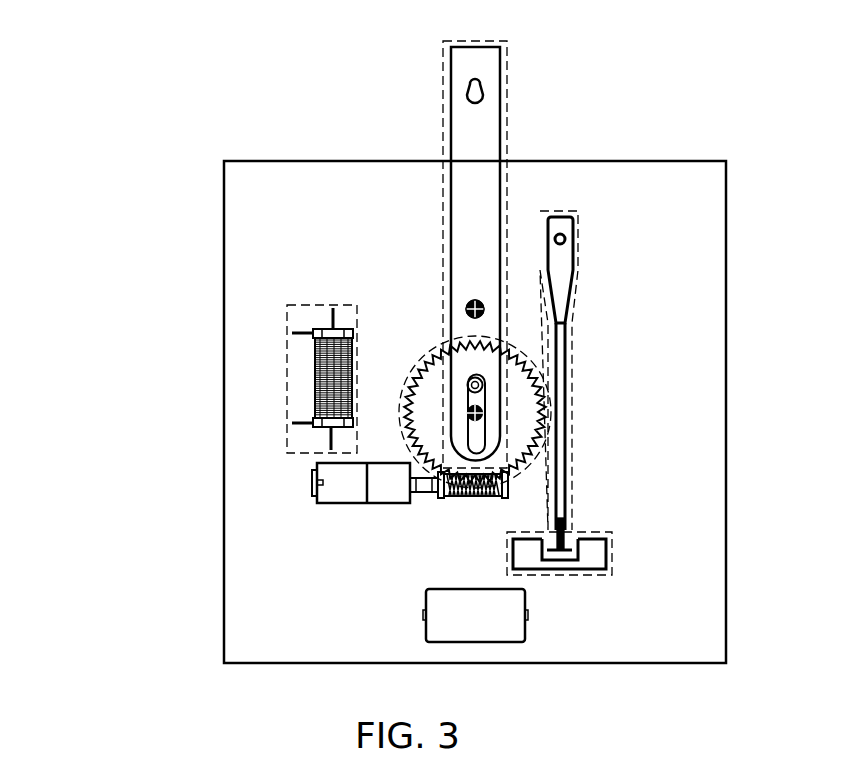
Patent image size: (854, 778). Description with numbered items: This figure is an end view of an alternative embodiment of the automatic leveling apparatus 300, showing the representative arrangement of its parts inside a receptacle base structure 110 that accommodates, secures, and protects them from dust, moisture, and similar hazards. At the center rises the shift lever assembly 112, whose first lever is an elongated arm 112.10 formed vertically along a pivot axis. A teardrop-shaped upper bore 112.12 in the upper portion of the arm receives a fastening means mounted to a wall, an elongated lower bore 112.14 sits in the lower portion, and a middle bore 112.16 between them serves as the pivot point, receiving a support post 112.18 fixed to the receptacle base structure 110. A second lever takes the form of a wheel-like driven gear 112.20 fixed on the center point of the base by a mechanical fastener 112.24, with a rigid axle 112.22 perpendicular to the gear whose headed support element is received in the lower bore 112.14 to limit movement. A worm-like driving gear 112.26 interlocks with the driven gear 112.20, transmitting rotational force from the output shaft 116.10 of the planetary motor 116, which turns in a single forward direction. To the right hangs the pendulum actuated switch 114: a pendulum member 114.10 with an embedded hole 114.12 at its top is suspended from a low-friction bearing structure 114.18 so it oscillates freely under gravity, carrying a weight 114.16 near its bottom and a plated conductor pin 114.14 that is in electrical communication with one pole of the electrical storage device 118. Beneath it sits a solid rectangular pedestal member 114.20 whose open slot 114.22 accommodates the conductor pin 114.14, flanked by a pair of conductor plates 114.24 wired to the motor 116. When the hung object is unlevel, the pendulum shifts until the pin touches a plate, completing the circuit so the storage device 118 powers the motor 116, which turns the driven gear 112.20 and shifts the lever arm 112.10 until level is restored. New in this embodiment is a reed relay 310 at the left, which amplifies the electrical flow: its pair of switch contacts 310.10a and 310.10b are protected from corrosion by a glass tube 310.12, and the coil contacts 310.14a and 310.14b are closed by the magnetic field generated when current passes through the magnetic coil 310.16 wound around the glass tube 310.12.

The automatic leveling apparatus 300 is at (182, 130).
The receptacle base structure 110 is at (224, 206).
The shift lever assembly 112 is at (507, 41).
The elongated arm 112.10 is at (451, 78).
The upper bore 112.12 is at (485, 97).
The lower bore 112.14 is at (485, 454).
The middle bore 112.16 is at (468, 303).
The support post 112.18 is at (470, 303).
The wheel-like driven gear 112.20 is at (420, 380).
The rigid axle 112.22 is at (483, 384).
The mechanical fastener 112.24 is at (483, 411).
The worm-like driving gear 112.26 is at (510, 480).
The pendulum actuated switch 114 is at (578, 224).
The pendulum member 114.10 is at (565, 338).
The embedded hole 114.12 is at (573, 243).
The conductor pin 114.14 is at (563, 552).
The weight 114.16 is at (505, 497).
The bearing structure 114.18 is at (562, 234).
The pedestal member 114.20 is at (606, 562).
The open slot 114.22 is at (570, 546).
The conductor plates 114.24 is at (578, 546).
The planetary motor 116 is at (330, 504).
The output shaft 116.10 is at (418, 492).
The electrical storage device 118 is at (426, 624).
The reed relay 310 is at (290, 303).
The switch contact 310.10a is at (333, 312).
The switch contact 310.10b is at (331, 443).
The glass tube 310.12 is at (315, 404).
The coil contact 310.14a is at (292, 333).
The coil contact 310.14b is at (292, 424).
The magnetic coil 310.16 is at (313, 372).